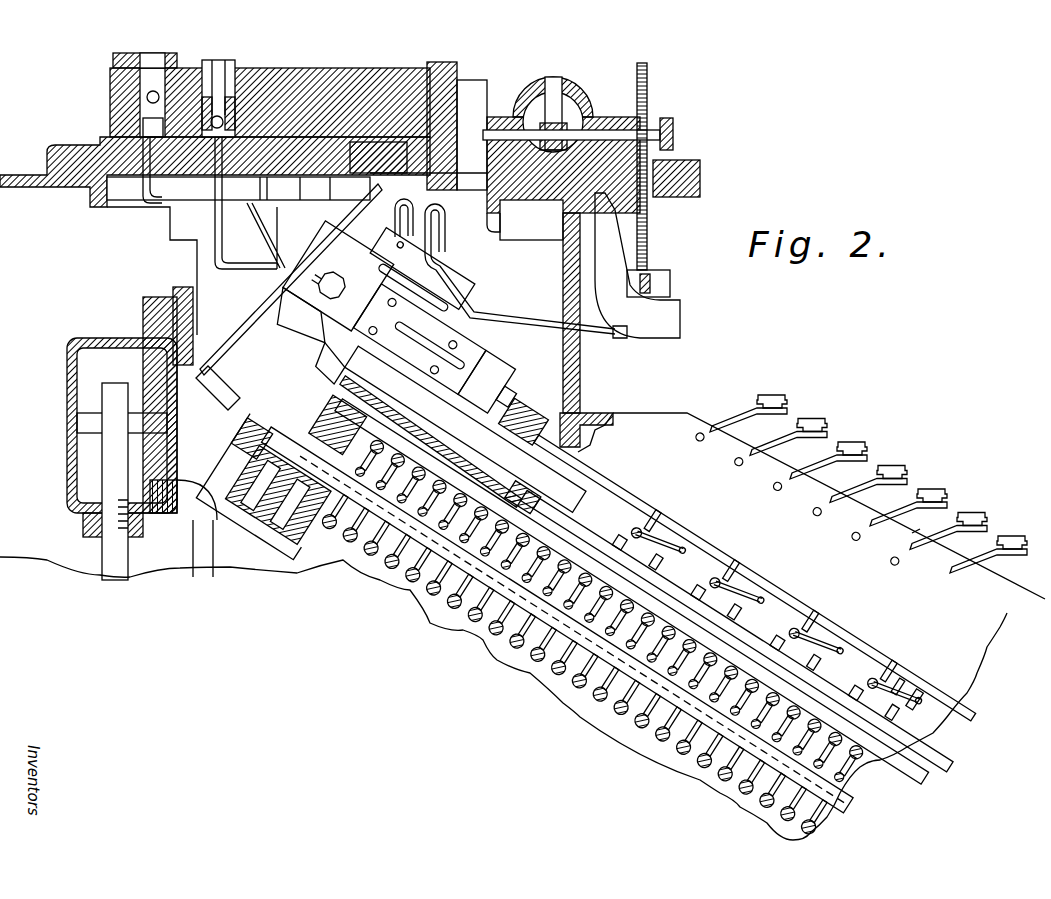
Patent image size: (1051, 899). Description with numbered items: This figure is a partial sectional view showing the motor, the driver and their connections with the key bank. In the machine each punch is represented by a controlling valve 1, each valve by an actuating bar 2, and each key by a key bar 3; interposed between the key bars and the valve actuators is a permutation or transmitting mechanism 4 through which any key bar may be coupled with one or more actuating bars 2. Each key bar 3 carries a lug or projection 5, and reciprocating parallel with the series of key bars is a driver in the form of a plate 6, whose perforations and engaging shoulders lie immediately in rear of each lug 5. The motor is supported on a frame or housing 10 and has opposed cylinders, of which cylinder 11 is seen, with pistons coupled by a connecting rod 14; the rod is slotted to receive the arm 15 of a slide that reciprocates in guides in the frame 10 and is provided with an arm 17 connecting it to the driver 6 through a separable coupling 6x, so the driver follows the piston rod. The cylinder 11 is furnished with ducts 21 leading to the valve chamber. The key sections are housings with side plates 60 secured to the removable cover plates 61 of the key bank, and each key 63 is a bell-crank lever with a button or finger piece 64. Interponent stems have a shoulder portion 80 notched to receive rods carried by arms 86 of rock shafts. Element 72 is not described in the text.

The controlling valve 1 is at (242, 402).
The actuating bar 2 is at (540, 622).
The key bar 3 is at (528, 542).
The permutation or transmitting mechanism 4 is at (858, 785).
The lug or projection 5 is at (622, 575).
The driver plate 6 is at (932, 748).
The separable coupling 6x is at (533, 487).
The frame or housing 10 is at (419, 339).
The cylinder 11 is at (489, 385).
The connecting rod 14 is at (305, 320).
The arm of slide 15 is at (336, 363).
The arm 17 is at (465, 429).
The duct 21 is at (388, 252).
The side plate 60 is at (829, 515).
The removable cover plate 61 is at (596, 413).
The key 63 is at (898, 540).
The button or finger piece 64 is at (818, 430).
The block 72 is at (338, 276).
The shoulder portion 80 is at (912, 700).
The arm 86 is at (895, 690).